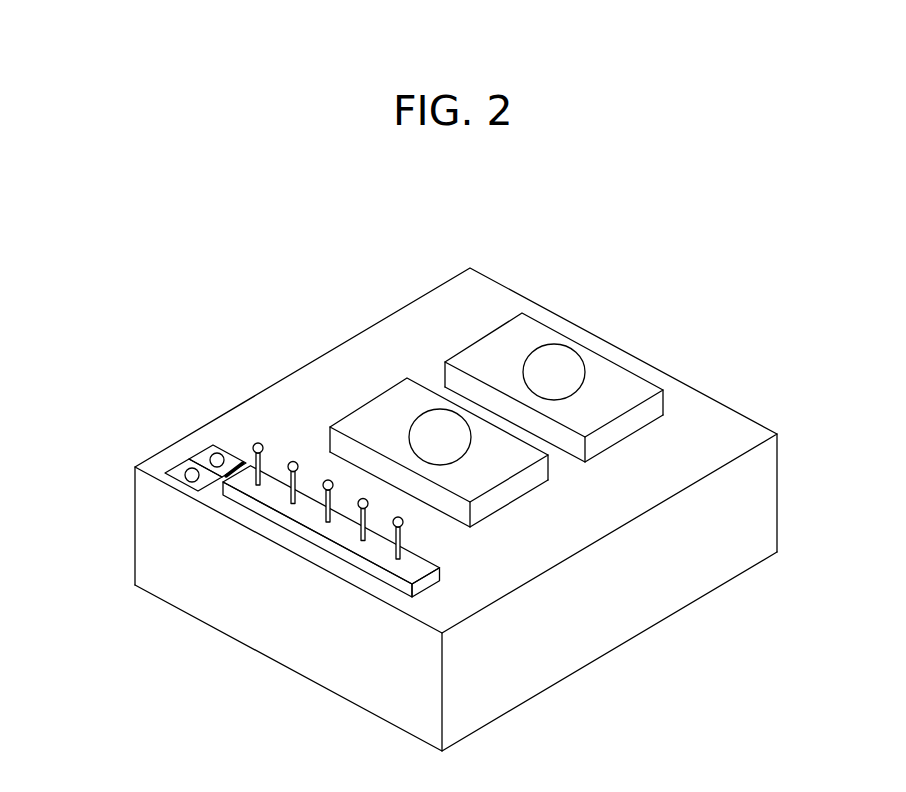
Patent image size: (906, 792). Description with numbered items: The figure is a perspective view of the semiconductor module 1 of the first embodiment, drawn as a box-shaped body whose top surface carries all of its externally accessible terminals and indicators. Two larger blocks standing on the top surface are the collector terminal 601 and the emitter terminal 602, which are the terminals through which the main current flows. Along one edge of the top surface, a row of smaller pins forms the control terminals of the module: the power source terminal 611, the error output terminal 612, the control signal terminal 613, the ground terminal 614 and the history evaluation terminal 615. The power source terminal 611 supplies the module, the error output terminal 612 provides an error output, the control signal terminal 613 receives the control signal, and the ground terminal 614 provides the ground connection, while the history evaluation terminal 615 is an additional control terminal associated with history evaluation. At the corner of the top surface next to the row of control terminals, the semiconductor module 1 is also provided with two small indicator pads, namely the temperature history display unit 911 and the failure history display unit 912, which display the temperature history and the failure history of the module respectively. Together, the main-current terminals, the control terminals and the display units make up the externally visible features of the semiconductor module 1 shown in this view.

The semiconductor module 1 is at (705, 428).
The collector terminal 601 is at (600, 368).
The emitter terminal 602 is at (395, 410).
The power source terminal 611 is at (398, 544).
The error output terminal 612 is at (363, 525).
The control signal terminal 613 is at (328, 507).
The ground terminal 614 is at (293, 489).
The history evaluation terminal 615 is at (258, 441).
The temperature history display unit 911 is at (190, 472).
The failure history display unit 912 is at (217, 457).